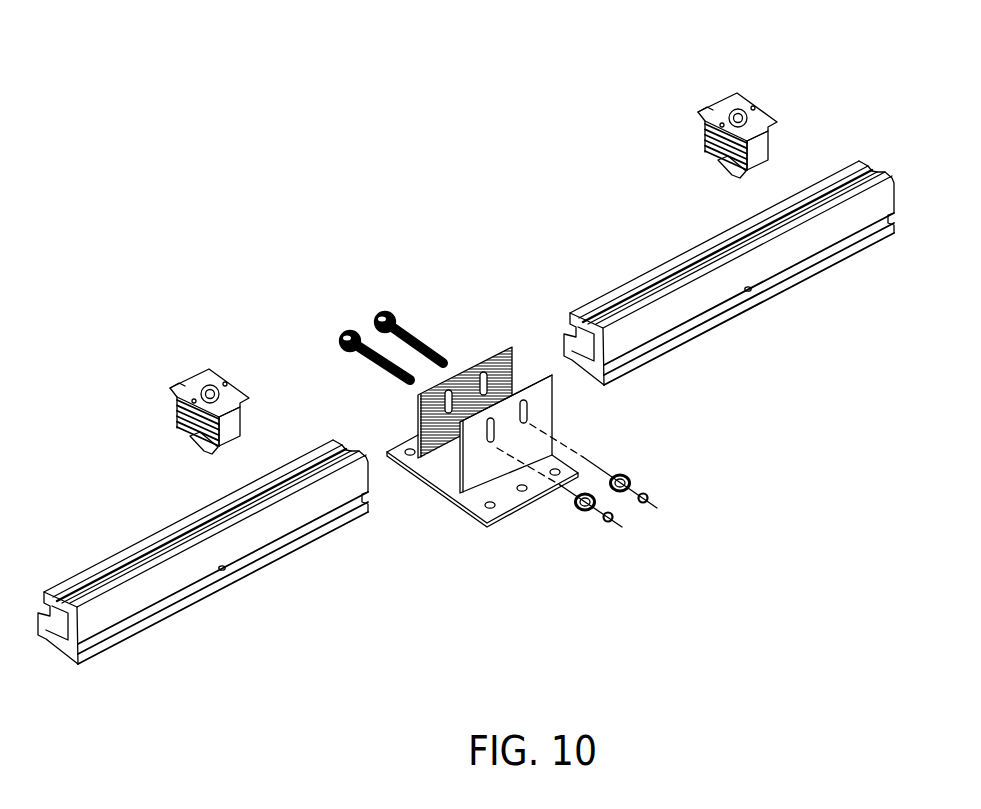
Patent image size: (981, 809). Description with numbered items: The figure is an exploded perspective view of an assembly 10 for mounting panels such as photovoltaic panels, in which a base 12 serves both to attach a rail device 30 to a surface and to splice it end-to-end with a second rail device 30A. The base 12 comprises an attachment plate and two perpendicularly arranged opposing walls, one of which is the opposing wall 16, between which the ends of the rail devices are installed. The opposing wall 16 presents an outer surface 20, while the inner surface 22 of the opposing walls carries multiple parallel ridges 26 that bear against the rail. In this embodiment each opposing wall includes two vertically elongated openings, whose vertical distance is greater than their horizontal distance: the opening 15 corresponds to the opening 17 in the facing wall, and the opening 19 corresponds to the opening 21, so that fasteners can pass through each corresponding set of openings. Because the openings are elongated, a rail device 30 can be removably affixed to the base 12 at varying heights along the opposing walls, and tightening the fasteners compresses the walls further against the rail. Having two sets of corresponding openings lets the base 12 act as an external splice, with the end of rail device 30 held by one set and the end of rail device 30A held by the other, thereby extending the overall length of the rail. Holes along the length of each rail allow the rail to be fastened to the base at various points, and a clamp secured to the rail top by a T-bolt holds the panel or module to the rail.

The assembly 10 is at (238, 213).
The base 12 is at (468, 488).
The vertically elongated opening 15 is at (538, 412).
The opposing wall 16 is at (548, 393).
The vertically elongated opening 17 is at (482, 372).
The vertical extended opening 19 is at (490, 442).
The outer surface 20 is at (530, 425).
The vertical extended opening 21 is at (453, 391).
The inner surface 22 is at (424, 432).
The parallel ridges 26 is at (430, 412).
The rail device 30 is at (603, 243).
The rail device 30A is at (95, 558).